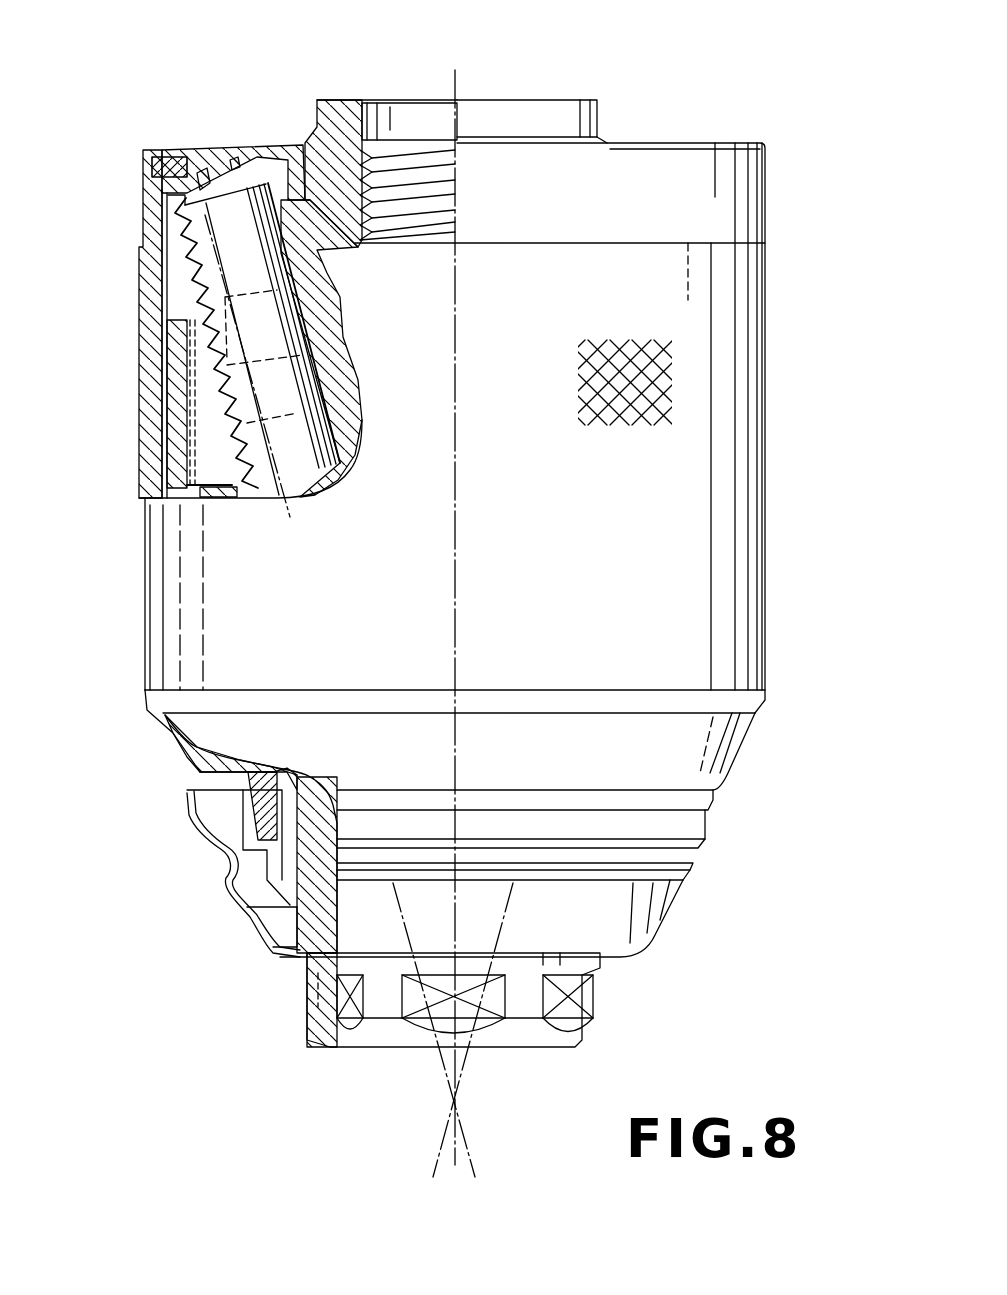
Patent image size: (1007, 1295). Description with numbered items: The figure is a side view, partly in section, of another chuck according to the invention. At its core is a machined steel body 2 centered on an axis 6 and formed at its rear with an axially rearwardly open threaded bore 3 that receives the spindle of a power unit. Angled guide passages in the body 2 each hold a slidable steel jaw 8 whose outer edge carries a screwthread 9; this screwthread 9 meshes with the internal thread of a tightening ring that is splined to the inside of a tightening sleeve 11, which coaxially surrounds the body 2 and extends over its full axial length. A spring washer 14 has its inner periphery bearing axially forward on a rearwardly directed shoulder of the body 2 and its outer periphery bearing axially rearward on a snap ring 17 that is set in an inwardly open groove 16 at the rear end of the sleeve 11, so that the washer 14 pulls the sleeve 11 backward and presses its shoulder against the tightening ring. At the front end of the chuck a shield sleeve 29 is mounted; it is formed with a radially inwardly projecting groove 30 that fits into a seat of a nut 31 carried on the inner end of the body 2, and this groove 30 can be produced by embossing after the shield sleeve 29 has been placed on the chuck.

The body 2 is at (330, 157).
The threaded bore 3 is at (403, 167).
The axis 6 is at (457, 80).
The jaw 8 is at (222, 212).
The screwthread 9 is at (170, 253).
The tightening sleeve 11 is at (150, 487).
The spring washer 14 is at (265, 153).
The groove 16 is at (148, 162).
The snap ring 17 is at (172, 160).
The shield sleeve 29 is at (250, 943).
The groove 30 is at (217, 857).
The nut 31 is at (217, 827).